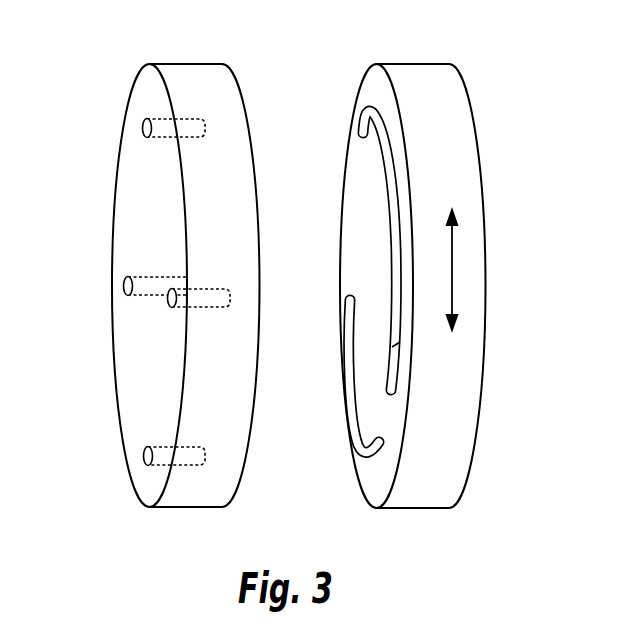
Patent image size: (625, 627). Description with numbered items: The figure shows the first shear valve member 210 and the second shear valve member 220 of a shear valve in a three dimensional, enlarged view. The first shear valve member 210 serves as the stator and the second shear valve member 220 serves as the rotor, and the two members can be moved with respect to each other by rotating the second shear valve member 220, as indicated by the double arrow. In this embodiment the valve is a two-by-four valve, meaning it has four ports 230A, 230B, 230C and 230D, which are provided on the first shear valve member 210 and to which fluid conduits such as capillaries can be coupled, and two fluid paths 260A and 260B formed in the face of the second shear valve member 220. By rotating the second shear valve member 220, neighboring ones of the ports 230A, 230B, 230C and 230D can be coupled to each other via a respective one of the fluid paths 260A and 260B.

The first shear valve member 210 is at (181, 72).
The second shear valve member 220 is at (417, 73).
The port 230A is at (142, 128).
The port 230B is at (167, 301).
The port 230C is at (144, 458).
The port 230D is at (123, 286).
The fluid path 260A is at (387, 163).
The fluid path 260B is at (384, 437).